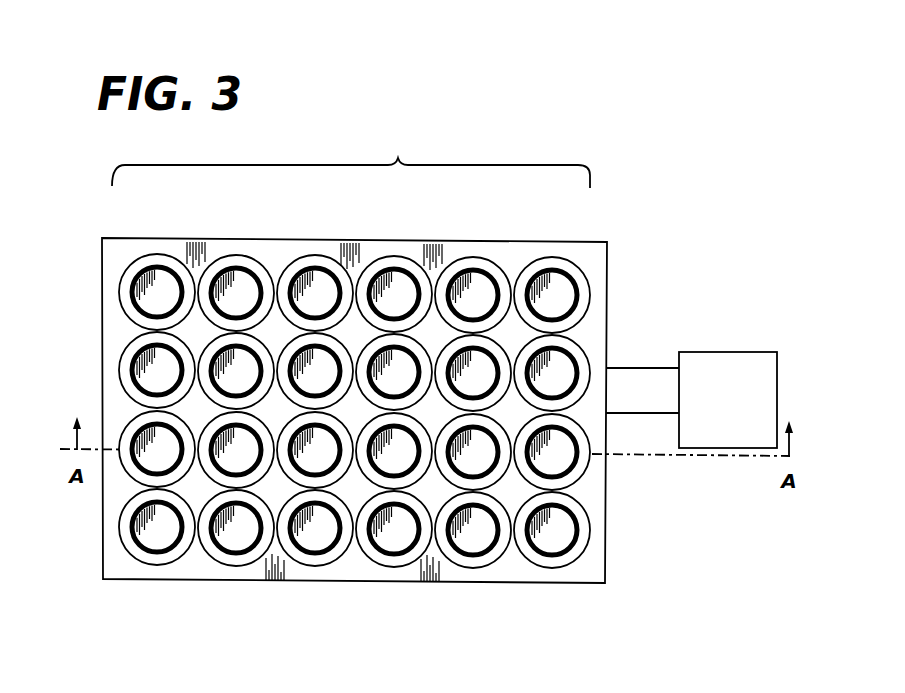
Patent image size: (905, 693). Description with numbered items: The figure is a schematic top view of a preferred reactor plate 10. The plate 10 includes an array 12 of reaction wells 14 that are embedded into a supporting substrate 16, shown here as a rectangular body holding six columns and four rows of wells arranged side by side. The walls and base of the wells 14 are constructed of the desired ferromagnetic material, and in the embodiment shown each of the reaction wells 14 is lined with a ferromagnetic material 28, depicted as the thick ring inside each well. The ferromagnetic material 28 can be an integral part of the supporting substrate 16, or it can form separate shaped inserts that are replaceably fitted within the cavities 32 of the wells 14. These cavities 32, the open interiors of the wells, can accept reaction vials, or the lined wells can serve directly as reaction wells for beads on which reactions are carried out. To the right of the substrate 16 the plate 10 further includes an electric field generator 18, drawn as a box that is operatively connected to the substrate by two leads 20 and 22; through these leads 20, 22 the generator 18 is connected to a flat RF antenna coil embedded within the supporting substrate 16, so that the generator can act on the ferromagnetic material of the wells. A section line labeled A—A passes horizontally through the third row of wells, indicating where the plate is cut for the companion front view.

The reactor plate 10 is at (676, 248).
The array 12 is at (351, 159).
The reaction wells 14 is at (297, 258).
The supporting substrate 16 is at (607, 572).
The electric field generator 18 is at (758, 352).
The lead 20 is at (642, 367).
The lead 22 is at (641, 414).
The ferromagnetic material 28 is at (222, 266).
The cavities 32 is at (550, 286).